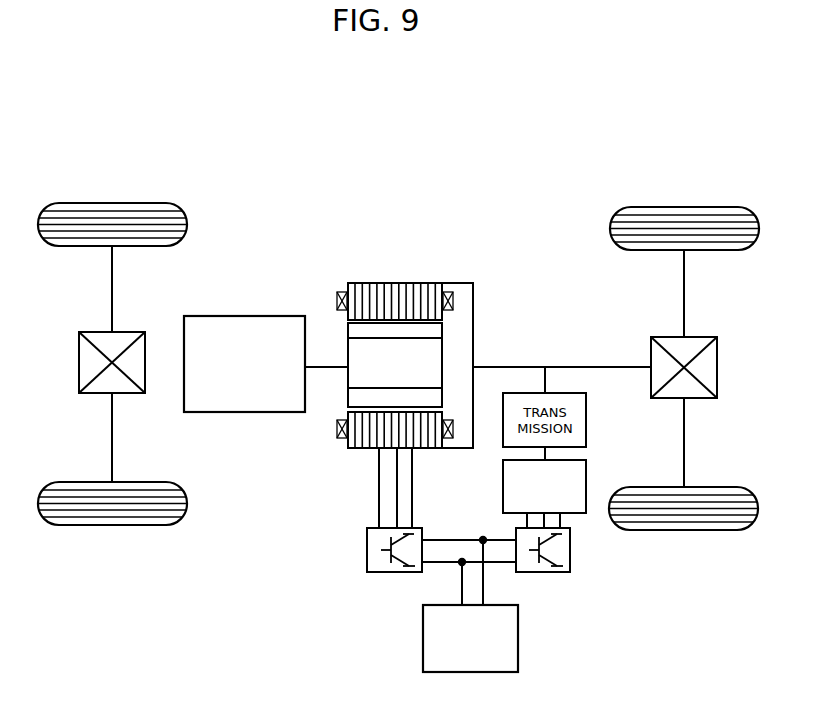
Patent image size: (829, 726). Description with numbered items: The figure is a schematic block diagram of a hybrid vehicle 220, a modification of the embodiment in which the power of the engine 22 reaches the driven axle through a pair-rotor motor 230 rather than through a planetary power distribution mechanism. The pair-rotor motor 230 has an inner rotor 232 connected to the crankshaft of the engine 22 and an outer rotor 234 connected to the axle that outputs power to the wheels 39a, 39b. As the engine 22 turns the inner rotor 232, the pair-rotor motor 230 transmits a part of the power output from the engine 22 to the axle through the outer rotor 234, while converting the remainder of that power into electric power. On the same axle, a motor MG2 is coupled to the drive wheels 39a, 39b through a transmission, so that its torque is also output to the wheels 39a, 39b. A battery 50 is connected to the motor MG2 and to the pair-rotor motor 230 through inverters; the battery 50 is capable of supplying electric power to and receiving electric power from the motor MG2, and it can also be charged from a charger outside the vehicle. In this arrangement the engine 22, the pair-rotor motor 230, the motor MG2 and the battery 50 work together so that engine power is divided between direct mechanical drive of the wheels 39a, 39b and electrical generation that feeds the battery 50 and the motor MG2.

The hybrid vehicle 220 is at (504, 121).
The engine 22 is at (247, 413).
The pair-rotor motor 230 is at (485, 166).
The inner rotor 232 is at (442, 367).
The outer rotor 234 is at (362, 283).
The wheel 39a is at (684, 207).
The wheel 39b is at (685, 530).
The motor MG2 is at (503, 489).
The battery 50 is at (519, 633).